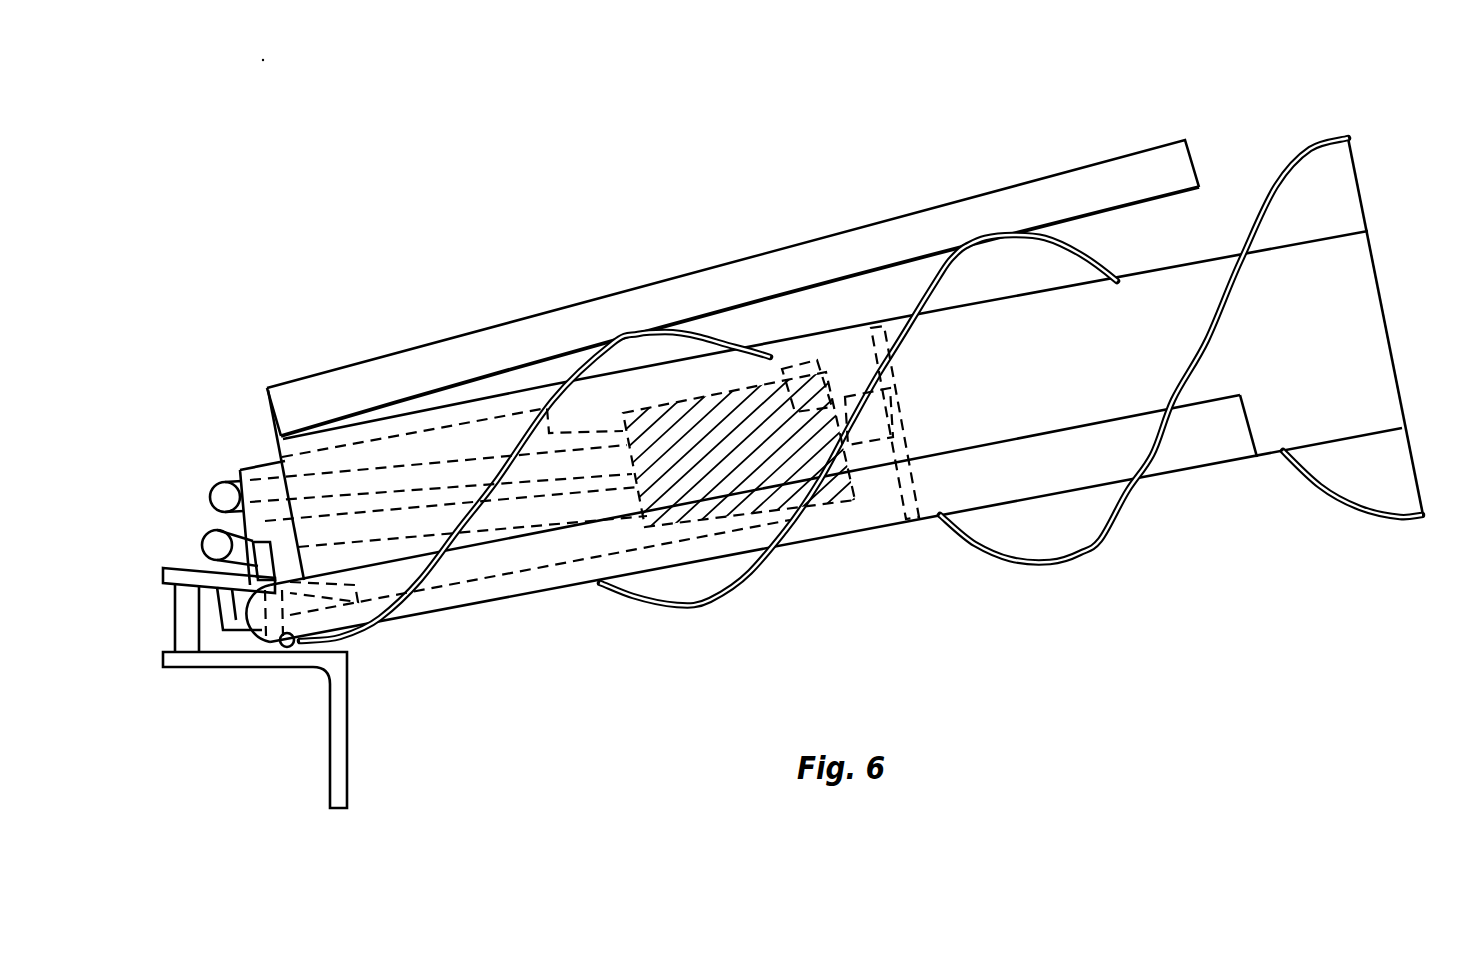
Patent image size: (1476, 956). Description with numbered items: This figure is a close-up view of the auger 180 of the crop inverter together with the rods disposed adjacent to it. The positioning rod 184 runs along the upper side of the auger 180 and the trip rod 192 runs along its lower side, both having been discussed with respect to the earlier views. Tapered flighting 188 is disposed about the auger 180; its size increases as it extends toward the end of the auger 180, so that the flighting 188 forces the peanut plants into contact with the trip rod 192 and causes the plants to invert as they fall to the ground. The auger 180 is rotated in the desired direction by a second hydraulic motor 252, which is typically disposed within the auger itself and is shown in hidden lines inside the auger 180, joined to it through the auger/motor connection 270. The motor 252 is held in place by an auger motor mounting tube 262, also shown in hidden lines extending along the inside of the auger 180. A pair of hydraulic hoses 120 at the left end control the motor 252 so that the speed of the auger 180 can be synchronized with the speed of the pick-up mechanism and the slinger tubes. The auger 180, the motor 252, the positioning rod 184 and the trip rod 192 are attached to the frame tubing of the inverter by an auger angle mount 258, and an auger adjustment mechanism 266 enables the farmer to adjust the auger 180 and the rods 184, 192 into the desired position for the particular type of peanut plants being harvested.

The hydraulic hoses 120 is at (225, 497).
The auger 180 is at (1367, 307).
The positioning rod 184 is at (1117, 172).
The flighting 188 is at (1337, 160).
The trip rod 192 is at (1228, 445).
The second hydraulic motor 252 is at (805, 383).
The auger angle mount 258 is at (262, 667).
The auger motor mounting tube 262 is at (464, 443).
The auger adjustment mechanism 266 is at (183, 575).
The auger/motor connection 270 is at (905, 507).